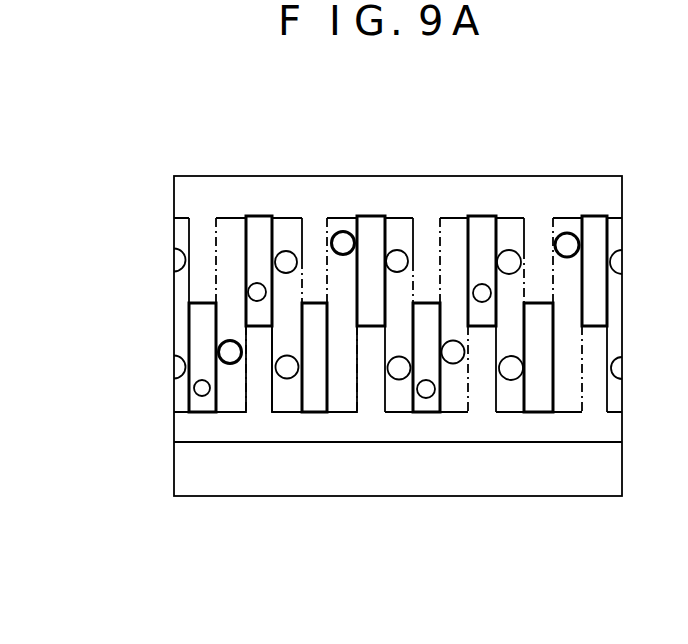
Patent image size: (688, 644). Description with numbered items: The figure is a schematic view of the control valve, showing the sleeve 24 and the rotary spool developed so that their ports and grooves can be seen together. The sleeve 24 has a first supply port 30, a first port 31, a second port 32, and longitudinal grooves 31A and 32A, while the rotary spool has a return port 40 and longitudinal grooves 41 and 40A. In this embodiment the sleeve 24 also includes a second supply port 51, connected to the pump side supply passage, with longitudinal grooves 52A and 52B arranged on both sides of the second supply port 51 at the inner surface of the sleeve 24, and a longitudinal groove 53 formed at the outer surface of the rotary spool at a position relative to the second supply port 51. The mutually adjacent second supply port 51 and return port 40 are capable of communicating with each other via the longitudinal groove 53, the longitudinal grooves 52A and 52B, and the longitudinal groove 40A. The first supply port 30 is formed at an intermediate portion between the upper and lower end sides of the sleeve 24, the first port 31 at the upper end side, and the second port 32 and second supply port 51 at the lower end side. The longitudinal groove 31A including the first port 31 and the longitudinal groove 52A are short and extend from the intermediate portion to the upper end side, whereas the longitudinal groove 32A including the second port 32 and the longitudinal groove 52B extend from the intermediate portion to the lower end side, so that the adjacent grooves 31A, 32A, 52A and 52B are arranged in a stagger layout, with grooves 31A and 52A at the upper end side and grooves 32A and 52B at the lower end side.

The sleeve 24 is at (200, 174).
The first supply port 30 is at (222, 351).
The first port 31 is at (248, 292).
The longitudinal groove 31A is at (257, 233).
The second port 32 is at (194, 390).
The longitudinal groove 32A is at (205, 408).
The return port 40 is at (286, 251).
The longitudinal groove 40A is at (289, 412).
The longitudinal groove 41 is at (237, 412).
The second supply port 51 is at (342, 231).
The longitudinal groove 52A is at (373, 224).
The longitudinal groove 52B is at (322, 413).
The longitudinal groove 53 is at (350, 413).